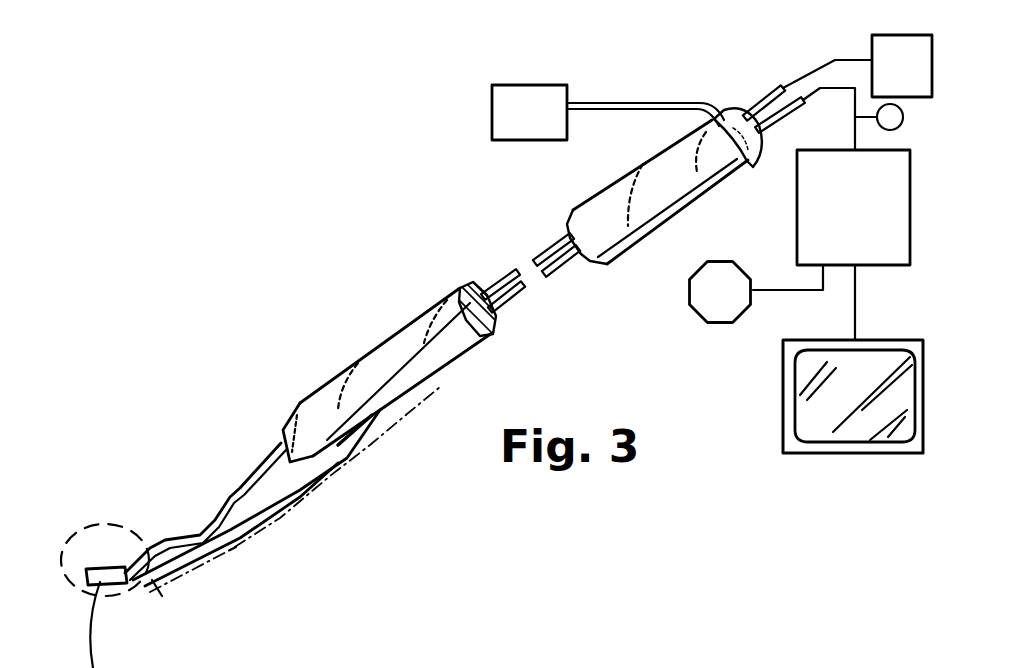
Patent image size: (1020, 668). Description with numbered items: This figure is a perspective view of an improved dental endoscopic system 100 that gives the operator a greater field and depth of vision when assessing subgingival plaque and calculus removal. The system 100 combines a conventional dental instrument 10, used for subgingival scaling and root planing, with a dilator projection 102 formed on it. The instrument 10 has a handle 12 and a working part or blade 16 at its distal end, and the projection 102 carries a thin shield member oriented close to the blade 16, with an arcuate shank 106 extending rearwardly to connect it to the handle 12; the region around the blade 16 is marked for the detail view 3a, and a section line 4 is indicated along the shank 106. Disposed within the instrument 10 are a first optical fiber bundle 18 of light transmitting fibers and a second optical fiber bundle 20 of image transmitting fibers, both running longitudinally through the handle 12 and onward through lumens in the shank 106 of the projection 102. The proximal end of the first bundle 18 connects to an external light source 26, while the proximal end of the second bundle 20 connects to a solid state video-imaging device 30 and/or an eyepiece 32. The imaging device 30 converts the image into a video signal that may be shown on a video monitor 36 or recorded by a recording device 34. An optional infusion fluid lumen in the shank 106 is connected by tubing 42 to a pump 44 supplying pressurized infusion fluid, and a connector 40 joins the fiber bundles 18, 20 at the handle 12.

The dental instrument 10 is at (297, 396).
The handle 12 is at (377, 357).
The working part or blade 16 is at (107, 570).
The first optical fiber bundle 18 is at (540, 250).
The second optical fiber bundle 20 is at (557, 268).
The external light source 26 is at (880, 50).
The video-imaging device 30 is at (797, 202).
The eyepiece 32 is at (895, 125).
The recording device 34 is at (853, 437).
The video monitor 36 is at (703, 302).
The connector 40 is at (473, 290).
The tubing 42 is at (623, 110).
The pump 44 is at (500, 126).
The dental endoscopic system 100 is at (300, 568).
The dilator projection 102 is at (340, 468).
The arcuate shank 106 is at (249, 538).
The detail view 3a is at (97, 628).
The section line 4 is at (432, 388).